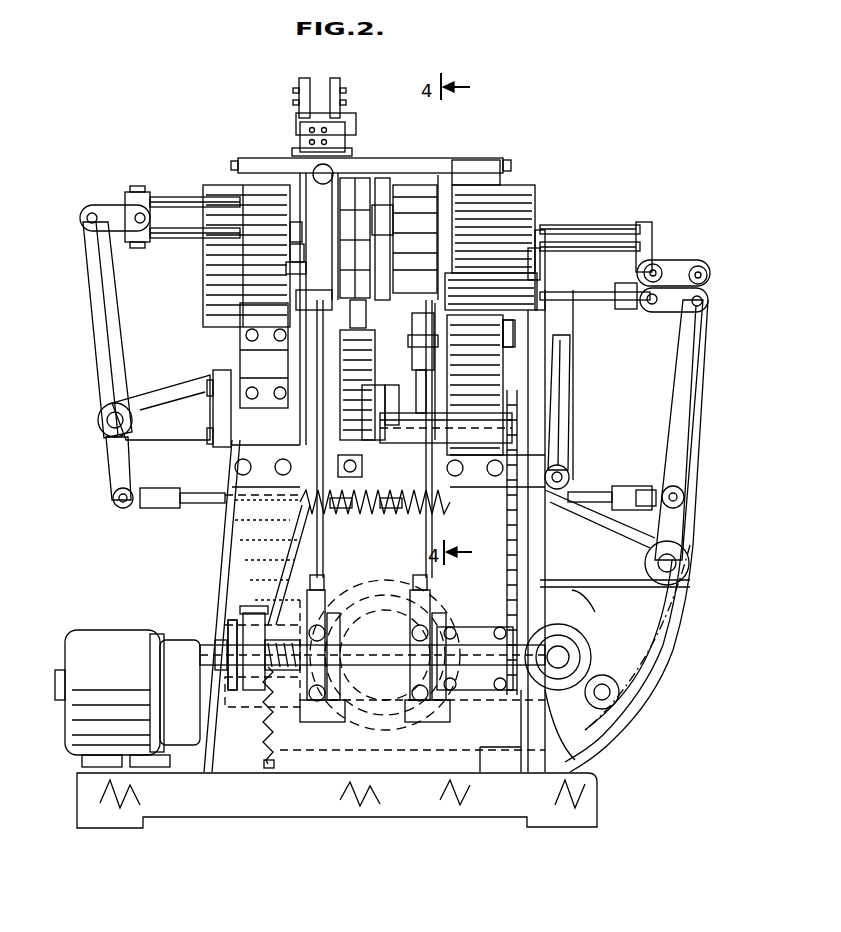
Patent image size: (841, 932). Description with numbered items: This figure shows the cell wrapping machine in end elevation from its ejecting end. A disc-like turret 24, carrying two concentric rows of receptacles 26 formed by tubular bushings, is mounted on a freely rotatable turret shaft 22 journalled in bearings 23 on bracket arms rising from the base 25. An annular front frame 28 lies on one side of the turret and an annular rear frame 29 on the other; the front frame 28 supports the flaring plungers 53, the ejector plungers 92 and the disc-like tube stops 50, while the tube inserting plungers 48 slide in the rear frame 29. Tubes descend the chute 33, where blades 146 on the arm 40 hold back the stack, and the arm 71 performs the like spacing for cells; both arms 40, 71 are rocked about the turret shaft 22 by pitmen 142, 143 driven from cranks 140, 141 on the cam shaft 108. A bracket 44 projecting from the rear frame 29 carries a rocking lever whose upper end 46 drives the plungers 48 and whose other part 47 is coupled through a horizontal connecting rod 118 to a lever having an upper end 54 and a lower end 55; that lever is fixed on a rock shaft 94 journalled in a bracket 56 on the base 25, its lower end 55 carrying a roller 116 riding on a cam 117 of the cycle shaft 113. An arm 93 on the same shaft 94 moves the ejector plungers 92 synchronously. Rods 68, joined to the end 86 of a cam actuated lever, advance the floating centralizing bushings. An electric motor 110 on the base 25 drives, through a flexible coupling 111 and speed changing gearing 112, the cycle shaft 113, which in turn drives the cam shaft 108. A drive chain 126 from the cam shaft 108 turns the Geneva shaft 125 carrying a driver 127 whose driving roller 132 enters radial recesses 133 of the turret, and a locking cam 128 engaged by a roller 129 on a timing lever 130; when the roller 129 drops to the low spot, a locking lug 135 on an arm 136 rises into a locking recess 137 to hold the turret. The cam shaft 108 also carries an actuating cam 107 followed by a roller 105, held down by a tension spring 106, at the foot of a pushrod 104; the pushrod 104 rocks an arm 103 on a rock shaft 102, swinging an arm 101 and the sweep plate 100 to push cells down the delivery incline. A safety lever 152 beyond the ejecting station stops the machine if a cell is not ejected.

The turret shaft 22 is at (458, 306).
The bearings 23 is at (226, 374).
The turret 24 is at (350, 185).
The base 25 is at (312, 778).
The receptacles 26 is at (385, 258).
The front frame 28 is at (481, 212).
The rear frame 29 is at (250, 262).
The tube chute 33 is at (318, 105).
The arm 40 is at (292, 378).
The bracket 44 is at (170, 402).
The upper end of rocking lever 46 is at (104, 355).
The rocking lever 47 is at (113, 463).
The tube inserting plungers 48 is at (178, 228).
The tube stops 50 is at (383, 214).
The flaring plungers 53 is at (582, 242).
The upper end of lever 54 is at (710, 303).
The lower end of lever 55 is at (666, 640).
The bracket 56 is at (620, 535).
The operating rods 68 is at (537, 256).
The arm 71 is at (422, 342).
The end of cam actuated lever 86 is at (566, 383).
The ejector plungers 92 is at (595, 302).
The arm 93 is at (690, 402).
The rock shaft 94 is at (673, 565).
The sweep plate 100 is at (332, 289).
The arm 101 is at (320, 266).
The rock shaft 102 is at (312, 182).
The arm 103 is at (296, 232).
The pushrod 104 is at (298, 253).
The roller 105 is at (254, 613).
The tension spring 106 is at (278, 740).
The actuating cam 107 is at (253, 690).
The cam shaft 108 is at (196, 645).
The electric motor 110 is at (99, 648).
The flexible coupling 111 is at (285, 715).
The speed changing gearing 112 is at (368, 608).
The cycle shaft 113 is at (560, 665).
The roller 116 is at (609, 701).
The cam 117 is at (585, 758).
The connecting rod 118 is at (588, 492).
The Geneva shaft 125 is at (463, 366).
The drive chain 126 is at (520, 460).
The driver 127 is at (403, 397).
The locking cam 128 is at (395, 416).
The roller 129 is at (372, 466).
The timing lever 130 is at (388, 508).
The driving roller 132 is at (364, 388).
The radial recesses 133 is at (356, 309).
The locking lug 135 is at (312, 504).
The arm 136 is at (340, 508).
The locking recess 137 is at (344, 392).
The crank 140 is at (322, 722).
The crank 141 is at (428, 722).
The pitman 142 is at (324, 563).
The pitman 143 is at (424, 548).
The air cut-off blades 146 is at (304, 128).
The safety lever 152 is at (298, 272).